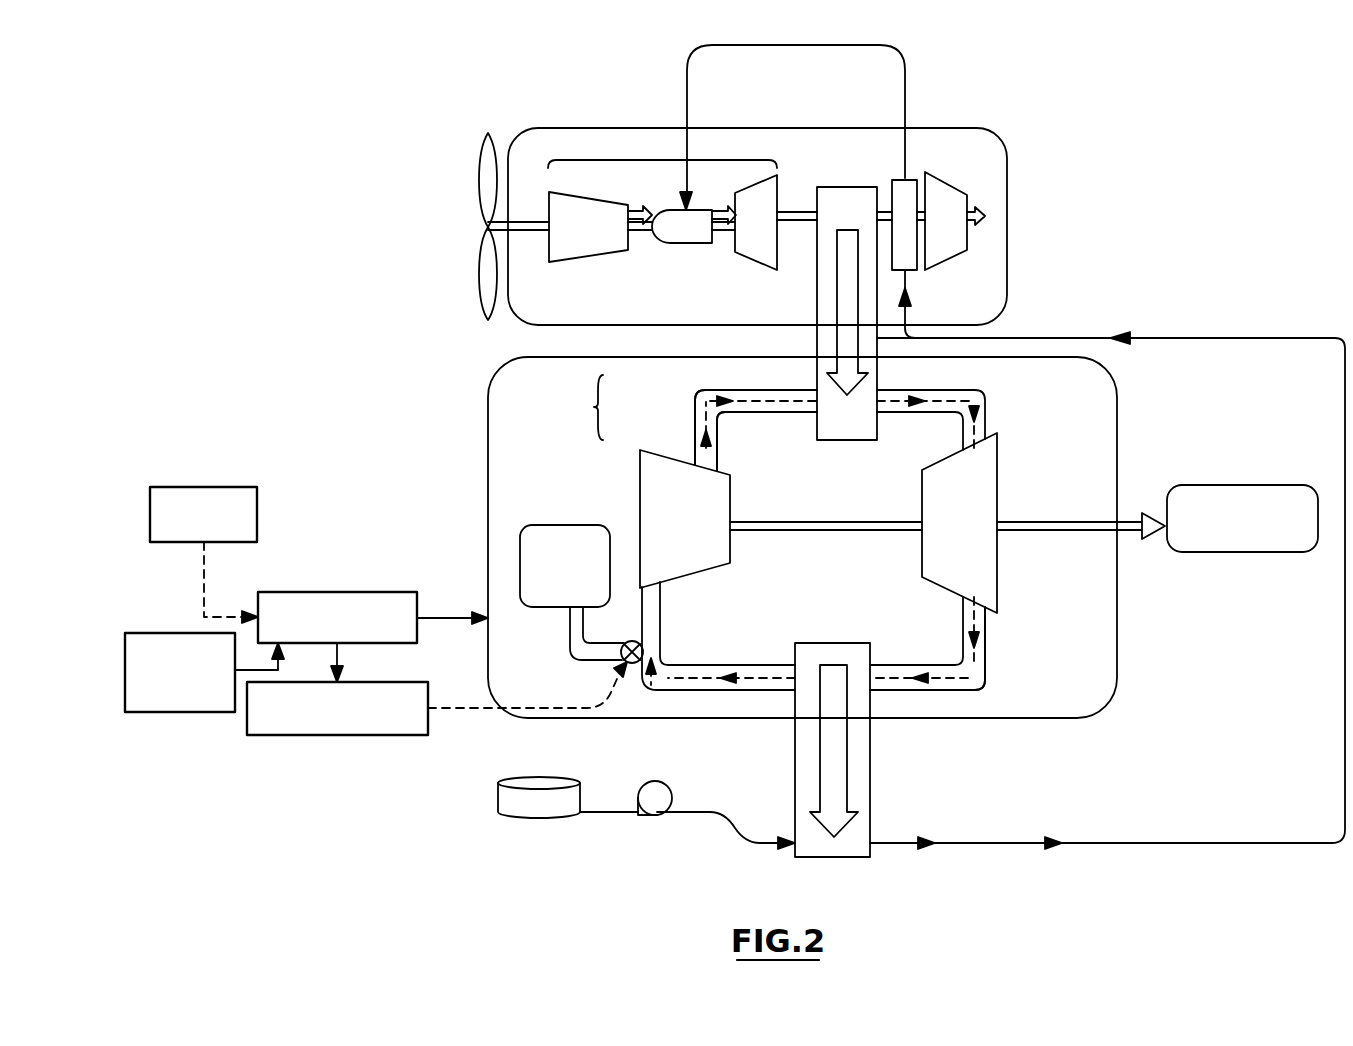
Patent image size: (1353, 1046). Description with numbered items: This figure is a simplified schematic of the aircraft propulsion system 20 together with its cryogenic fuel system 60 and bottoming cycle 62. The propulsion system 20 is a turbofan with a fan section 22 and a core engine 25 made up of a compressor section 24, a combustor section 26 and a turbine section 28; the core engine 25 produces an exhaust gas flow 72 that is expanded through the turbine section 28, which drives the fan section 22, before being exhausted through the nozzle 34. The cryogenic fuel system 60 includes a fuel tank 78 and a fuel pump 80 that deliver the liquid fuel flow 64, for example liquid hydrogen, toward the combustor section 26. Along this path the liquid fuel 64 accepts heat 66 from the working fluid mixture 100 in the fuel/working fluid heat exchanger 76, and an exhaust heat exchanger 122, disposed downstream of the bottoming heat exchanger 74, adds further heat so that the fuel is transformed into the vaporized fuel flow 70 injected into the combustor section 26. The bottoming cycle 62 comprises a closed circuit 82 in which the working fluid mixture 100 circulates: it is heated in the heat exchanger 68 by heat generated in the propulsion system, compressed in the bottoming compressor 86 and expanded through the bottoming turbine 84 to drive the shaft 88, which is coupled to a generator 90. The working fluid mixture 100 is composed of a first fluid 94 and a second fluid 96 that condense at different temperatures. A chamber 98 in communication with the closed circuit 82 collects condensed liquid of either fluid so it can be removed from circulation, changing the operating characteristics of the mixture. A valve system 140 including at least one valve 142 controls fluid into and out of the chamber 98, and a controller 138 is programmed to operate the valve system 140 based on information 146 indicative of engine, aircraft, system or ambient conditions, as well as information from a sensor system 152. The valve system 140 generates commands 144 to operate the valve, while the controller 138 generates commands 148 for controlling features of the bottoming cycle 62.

The aircraft propulsion system 20 is at (1143, 220).
The fan section 22 is at (493, 140).
The compressor section 24 is at (573, 262).
The core engine 25 is at (668, 160).
The combustor section 26 is at (685, 243).
The turbine section 28 is at (752, 258).
The nozzle 34 is at (940, 186).
The cryogenic fuel system 60 is at (456, 865).
The bottoming cycle 62 is at (478, 423).
The liquid fuel flow 64 is at (746, 846).
The heat from working fluid mixture 66 is at (834, 759).
The heat exchanger 68 is at (832, 297).
The vaporized fuel flow 70 is at (796, 46).
The exhaust gas flow 72 is at (793, 211).
The bottoming heat exchanger 74 is at (818, 334).
The fuel/working fluid heat exchanger 76 is at (795, 736).
The fuel tank 78 is at (524, 811).
The fuel pump 80 is at (657, 813).
The closed circuit 82 is at (997, 657).
The bottoming turbine 84 is at (930, 581).
The bottoming compressor 86 is at (697, 576).
The shaft 88 is at (1040, 532).
The generator 90 is at (1205, 553).
The first fluid 94 is at (697, 452).
The second fluid 96 is at (700, 404).
The chamber 98 is at (548, 608).
The working fluid mixture 100 is at (754, 532).
The exhaust heat exchanger 122 is at (905, 258).
The controller 138 is at (298, 592).
The valve system 140 is at (292, 735).
The valve 142 is at (633, 664).
The commands 144 is at (446, 614).
The information 146 is at (222, 487).
The commands 148 is at (490, 712).
The sensor system 152 is at (187, 712).